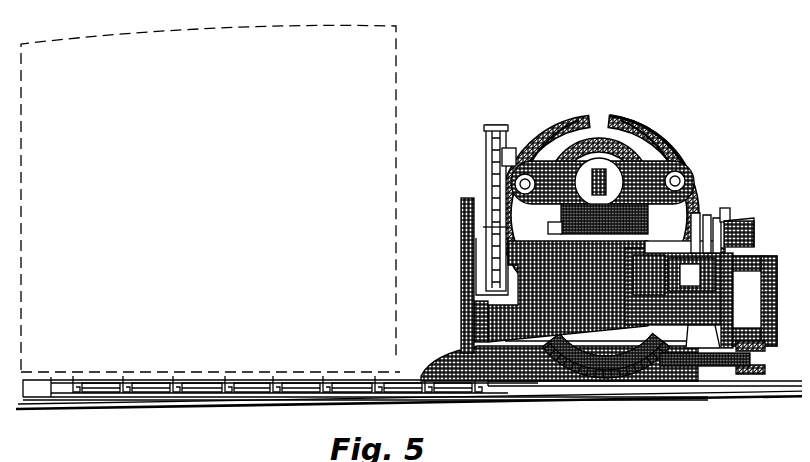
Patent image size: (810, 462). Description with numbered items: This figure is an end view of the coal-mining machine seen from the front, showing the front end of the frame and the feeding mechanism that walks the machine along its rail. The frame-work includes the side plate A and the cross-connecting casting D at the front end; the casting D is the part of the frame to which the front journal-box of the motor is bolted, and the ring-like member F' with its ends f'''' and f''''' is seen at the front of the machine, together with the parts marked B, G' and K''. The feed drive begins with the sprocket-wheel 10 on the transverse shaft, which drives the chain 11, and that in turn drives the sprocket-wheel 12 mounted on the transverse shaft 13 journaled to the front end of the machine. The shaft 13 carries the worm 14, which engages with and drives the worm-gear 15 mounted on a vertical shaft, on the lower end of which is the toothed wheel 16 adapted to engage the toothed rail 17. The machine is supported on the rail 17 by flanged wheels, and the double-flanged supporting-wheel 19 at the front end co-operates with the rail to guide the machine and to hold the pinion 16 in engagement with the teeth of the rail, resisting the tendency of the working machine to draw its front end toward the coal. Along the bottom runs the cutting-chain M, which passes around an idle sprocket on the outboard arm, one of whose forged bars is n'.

The sprocket-wheel 10 is at (498, 137).
The chain 11 is at (480, 190).
The sprocket-wheel 12 is at (476, 221).
The transverse shaft 13 is at (598, 228).
The worm 14 is at (675, 288).
The worm-gear 15 is at (744, 226).
The toothed wheel 16 is at (700, 352).
The toothed rail 17 is at (756, 356).
The double-flanged supporting-wheel 19 is at (749, 313).
The side plate A is at (723, 204).
The standard B is at (461, 250).
The cross-connecting casting D is at (561, 290).
The ring F' is at (617, 198).
The ring end f'''' is at (495, 146).
The ring end f''''' is at (681, 145).
The gear G' is at (606, 388).
The pivot K'' is at (601, 182).
The cutting-chain M is at (244, 378).
The forged bar n' is at (224, 198).